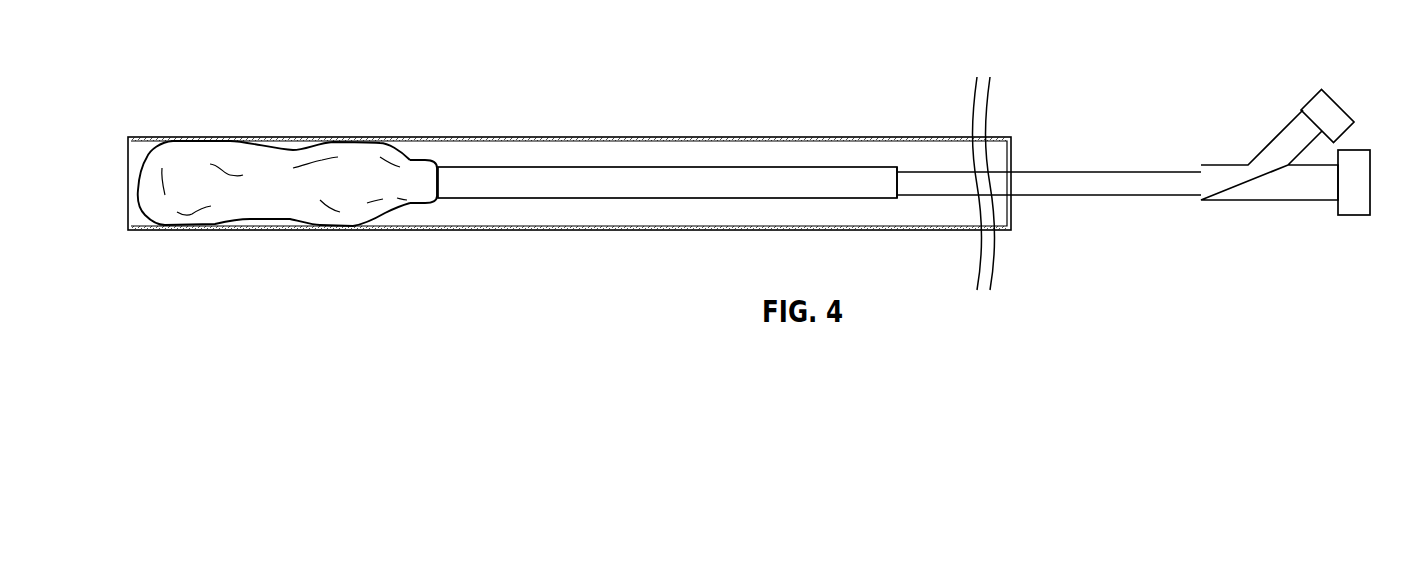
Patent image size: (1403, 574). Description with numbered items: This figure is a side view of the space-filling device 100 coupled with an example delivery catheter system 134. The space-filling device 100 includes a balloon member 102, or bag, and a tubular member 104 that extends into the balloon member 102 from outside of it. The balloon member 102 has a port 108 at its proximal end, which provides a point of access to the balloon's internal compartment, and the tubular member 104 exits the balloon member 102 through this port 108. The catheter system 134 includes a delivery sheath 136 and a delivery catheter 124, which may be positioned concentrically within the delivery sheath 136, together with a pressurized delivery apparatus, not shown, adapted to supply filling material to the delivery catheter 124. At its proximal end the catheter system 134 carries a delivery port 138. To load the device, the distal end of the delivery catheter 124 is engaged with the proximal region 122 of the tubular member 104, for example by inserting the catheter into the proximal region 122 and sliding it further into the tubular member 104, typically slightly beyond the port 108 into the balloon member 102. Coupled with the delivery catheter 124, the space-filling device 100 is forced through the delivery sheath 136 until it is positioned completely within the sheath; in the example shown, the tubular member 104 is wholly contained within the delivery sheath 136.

The space-filling device 100 is at (405, 205).
The balloon member 102 is at (233, 153).
The tubular member 104 is at (515, 167).
The port 108 is at (436, 160).
The proximal region of the tubular member 122 is at (877, 166).
The delivery catheter 124 is at (917, 171).
The catheter system 134 is at (1042, 129).
The delivery sheath 136 is at (420, 137).
The delivery port 138 is at (1253, 215).